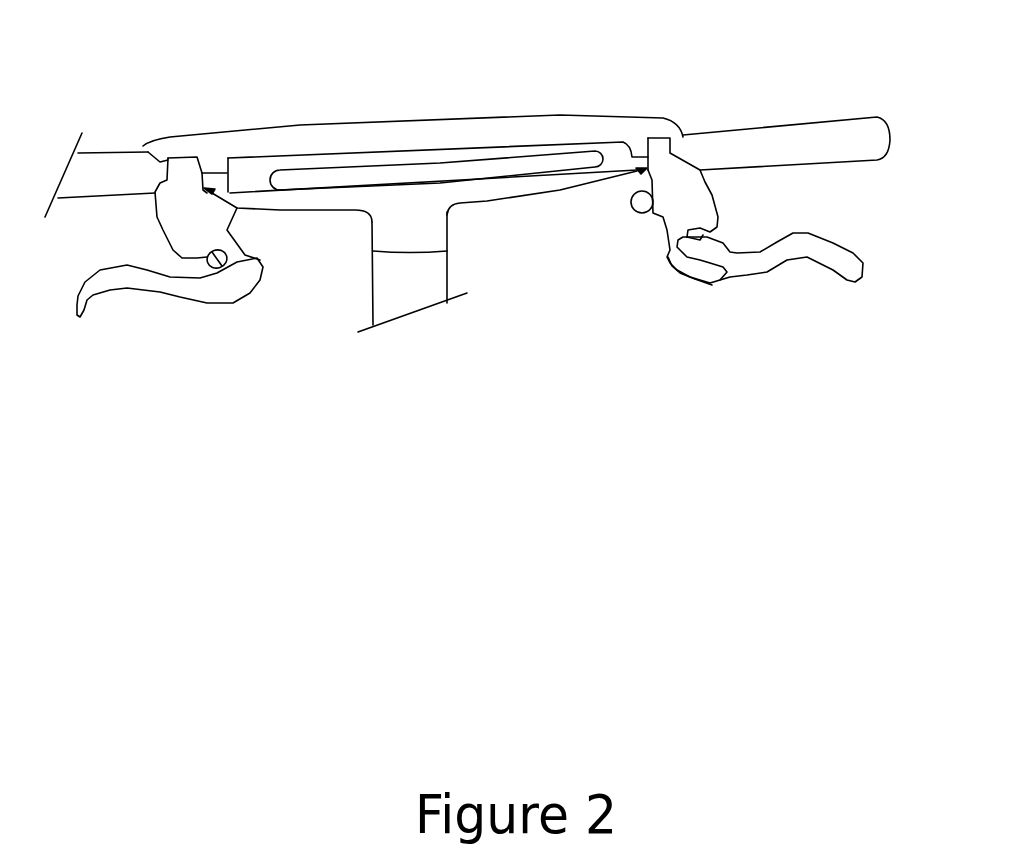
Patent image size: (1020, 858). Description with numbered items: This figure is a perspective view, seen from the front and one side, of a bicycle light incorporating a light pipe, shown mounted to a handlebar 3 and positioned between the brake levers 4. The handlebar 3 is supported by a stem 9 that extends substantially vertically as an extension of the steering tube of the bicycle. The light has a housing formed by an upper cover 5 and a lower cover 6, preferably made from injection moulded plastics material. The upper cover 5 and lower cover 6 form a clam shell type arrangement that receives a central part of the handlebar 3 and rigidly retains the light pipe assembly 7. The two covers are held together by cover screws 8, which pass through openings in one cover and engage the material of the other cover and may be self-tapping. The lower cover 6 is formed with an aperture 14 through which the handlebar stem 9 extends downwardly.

The handlebar 3 is at (788, 140).
The brake levers 4 is at (157, 297).
The upper cover 5 is at (475, 138).
The lower cover 6 is at (480, 193).
The light pipe assembly 7 is at (252, 178).
The cover screws 8 is at (213, 192).
The stem 9 is at (402, 292).
The aperture 14 is at (392, 252).